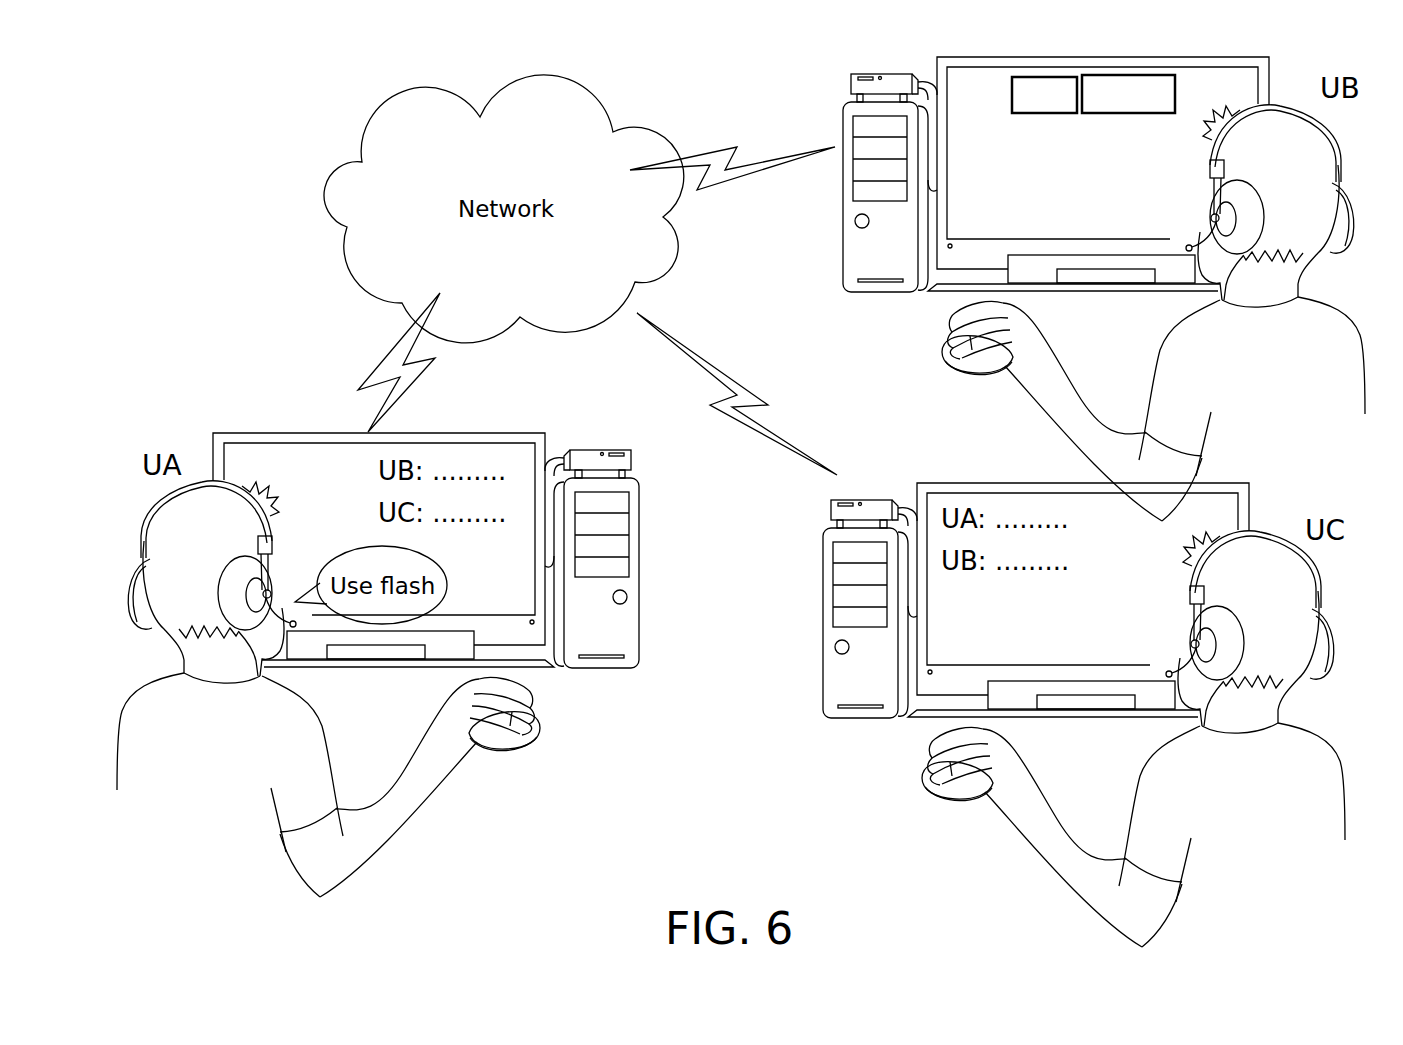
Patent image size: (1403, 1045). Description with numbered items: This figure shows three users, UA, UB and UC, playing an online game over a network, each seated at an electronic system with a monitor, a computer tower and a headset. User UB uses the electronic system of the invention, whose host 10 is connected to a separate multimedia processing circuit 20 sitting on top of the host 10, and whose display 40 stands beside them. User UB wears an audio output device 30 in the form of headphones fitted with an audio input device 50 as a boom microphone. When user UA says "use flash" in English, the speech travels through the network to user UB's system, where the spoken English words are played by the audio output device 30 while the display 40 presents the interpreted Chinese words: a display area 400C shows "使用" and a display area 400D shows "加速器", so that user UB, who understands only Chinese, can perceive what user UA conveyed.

The host 10 is at (851, 80).
The multimedia processing circuit 20 is at (884, 84).
The audio output device 30 is at (1353, 217).
The display 40 is at (1250, 57).
The audio input device 50 is at (1189, 248).
The display area 400C is at (1020, 77).
The display area 400D is at (1126, 75).